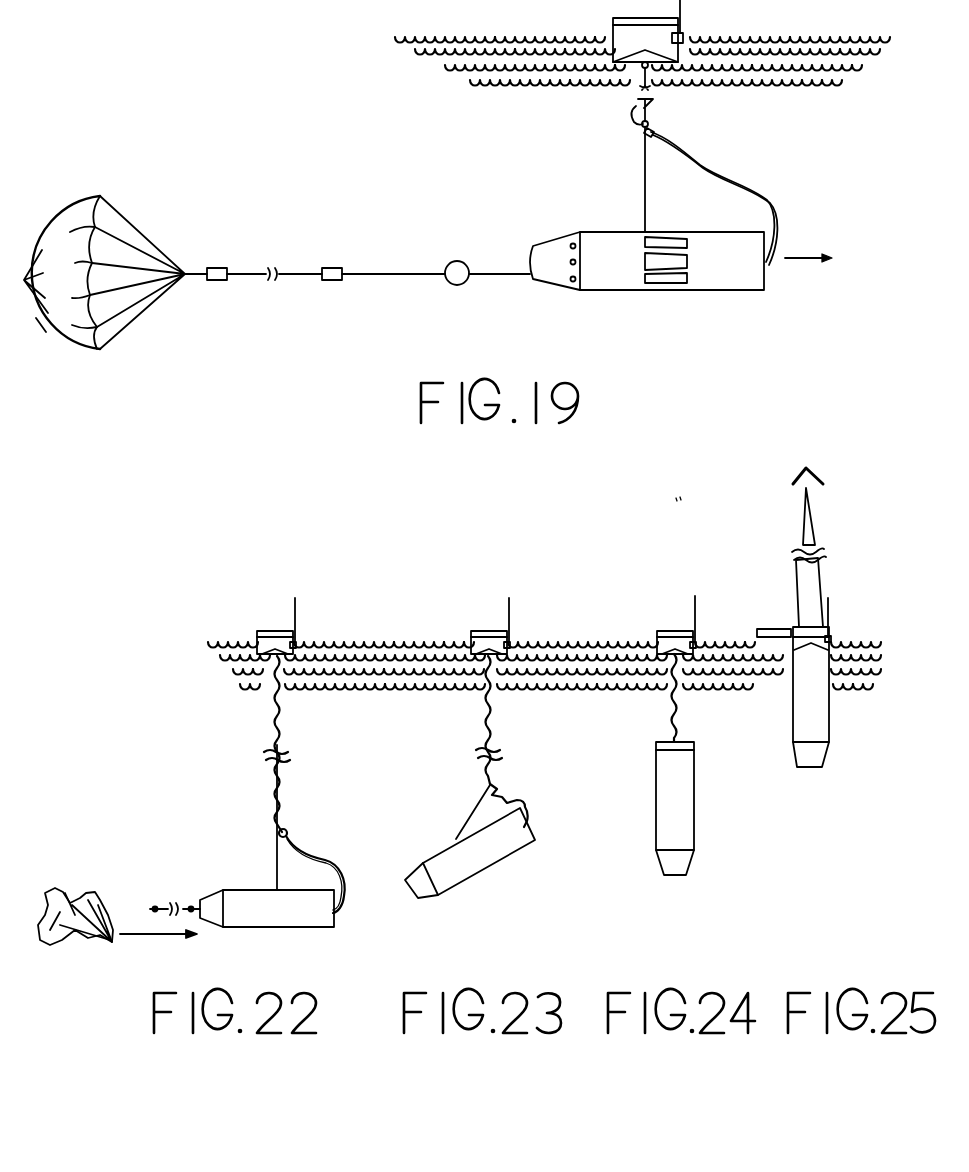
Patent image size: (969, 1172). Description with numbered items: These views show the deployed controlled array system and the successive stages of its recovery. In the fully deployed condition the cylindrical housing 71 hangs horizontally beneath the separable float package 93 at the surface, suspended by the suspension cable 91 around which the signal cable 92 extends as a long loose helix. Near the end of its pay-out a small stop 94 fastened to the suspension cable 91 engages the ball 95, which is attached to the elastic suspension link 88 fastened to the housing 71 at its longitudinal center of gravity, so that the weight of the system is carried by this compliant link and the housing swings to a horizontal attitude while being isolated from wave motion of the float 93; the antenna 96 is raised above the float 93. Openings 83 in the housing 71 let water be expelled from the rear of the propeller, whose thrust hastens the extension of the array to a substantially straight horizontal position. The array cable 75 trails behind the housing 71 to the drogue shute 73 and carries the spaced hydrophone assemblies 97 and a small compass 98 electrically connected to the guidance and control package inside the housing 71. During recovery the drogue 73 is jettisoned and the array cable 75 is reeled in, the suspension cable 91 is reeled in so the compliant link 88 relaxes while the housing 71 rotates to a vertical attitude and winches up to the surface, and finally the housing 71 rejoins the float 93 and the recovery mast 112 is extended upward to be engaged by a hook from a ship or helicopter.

In FIG. 19, the cylindrical housing 71 is at (693, 225).
In FIG. 22, the cylindrical housing 71 is at (277, 933).
In FIG. 23, the cylindrical housing 71 is at (487, 875).
In FIG. 24, the cylindrical housing 71 is at (699, 789).
In FIG. 19, the drogue shute 73 is at (92, 186).
In FIG. 22, the drogue shute 73 is at (83, 886).
In FIG. 19, the array cable 75 is at (256, 269).
In FIG. 19, the openings 83 is at (727, 258).
In FIG. 19, the elastic suspension link 88 is at (649, 196).
In FIG. 19, the suspension cable 91 is at (738, 171).
In FIG. 19, the signal cable 92 is at (754, 189).
In FIG. 22, the separable float package 93 is at (260, 627).
In FIG. 23, the separable float package 93 is at (471, 627).
In FIG. 24, the separable float package 93 is at (658, 627).
In FIG. 19, the stop 94 is at (662, 126).
In FIG. 19, the ball 95 is at (638, 123).
In FIG. 25, the antenna 96 is at (834, 593).
In FIG. 19, the hydrophone assemblies 97 is at (229, 248).
In FIG. 19, the compass 98 is at (462, 249).
In FIG. 25, the recovery mast 112 is at (818, 525).